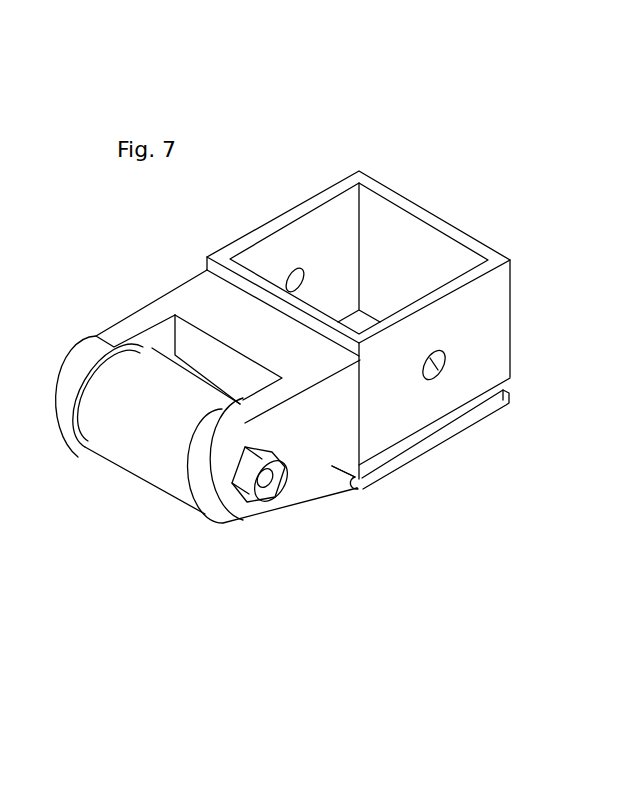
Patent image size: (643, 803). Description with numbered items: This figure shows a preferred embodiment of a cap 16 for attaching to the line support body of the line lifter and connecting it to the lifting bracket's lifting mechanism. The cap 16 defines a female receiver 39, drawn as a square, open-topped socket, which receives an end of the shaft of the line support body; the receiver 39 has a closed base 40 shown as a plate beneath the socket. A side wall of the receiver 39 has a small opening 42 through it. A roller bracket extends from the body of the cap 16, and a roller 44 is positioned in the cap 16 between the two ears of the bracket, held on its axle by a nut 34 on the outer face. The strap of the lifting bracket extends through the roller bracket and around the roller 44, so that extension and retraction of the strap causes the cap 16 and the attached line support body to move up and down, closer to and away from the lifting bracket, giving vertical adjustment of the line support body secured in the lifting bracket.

The cap 16 is at (382, 540).
The fastener nut 34 is at (230, 530).
The female receiver 39 is at (398, 253).
The closed base 40 is at (450, 438).
The aperture 42 is at (447, 363).
The roller 44 is at (115, 455).